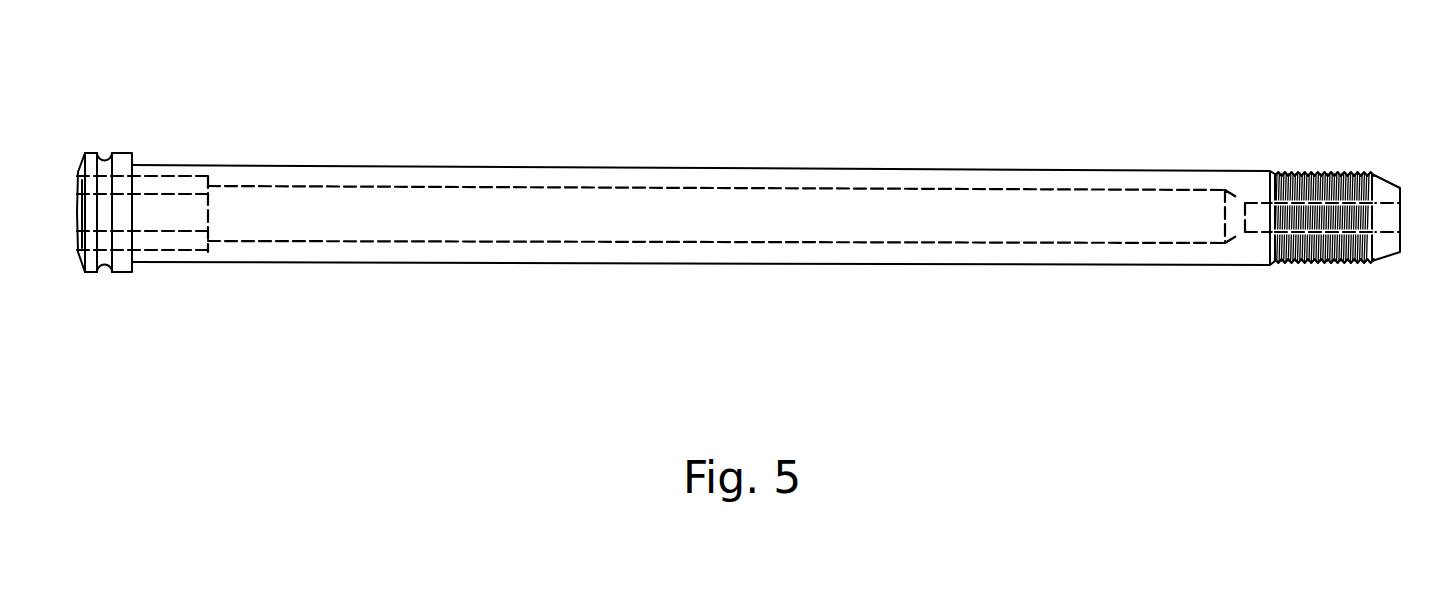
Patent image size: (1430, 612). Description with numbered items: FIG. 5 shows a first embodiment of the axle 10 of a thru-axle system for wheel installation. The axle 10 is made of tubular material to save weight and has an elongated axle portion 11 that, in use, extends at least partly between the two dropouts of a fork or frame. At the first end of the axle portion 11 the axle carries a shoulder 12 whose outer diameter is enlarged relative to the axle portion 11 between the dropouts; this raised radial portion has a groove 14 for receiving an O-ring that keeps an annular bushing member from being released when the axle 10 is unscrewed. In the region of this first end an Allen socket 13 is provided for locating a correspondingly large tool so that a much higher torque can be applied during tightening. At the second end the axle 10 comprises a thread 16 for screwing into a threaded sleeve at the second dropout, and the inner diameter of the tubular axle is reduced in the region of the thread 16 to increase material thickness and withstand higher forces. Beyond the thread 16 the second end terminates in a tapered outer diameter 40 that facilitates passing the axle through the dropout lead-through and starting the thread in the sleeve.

The axle 10 is at (903, 94).
The axle portion 11 is at (502, 167).
The shoulder 12 is at (132, 273).
The Allen socket 13 is at (178, 212).
The groove 14 is at (104, 152).
The thread 16 is at (1288, 170).
The tapered outer diameter 40 is at (1383, 177).